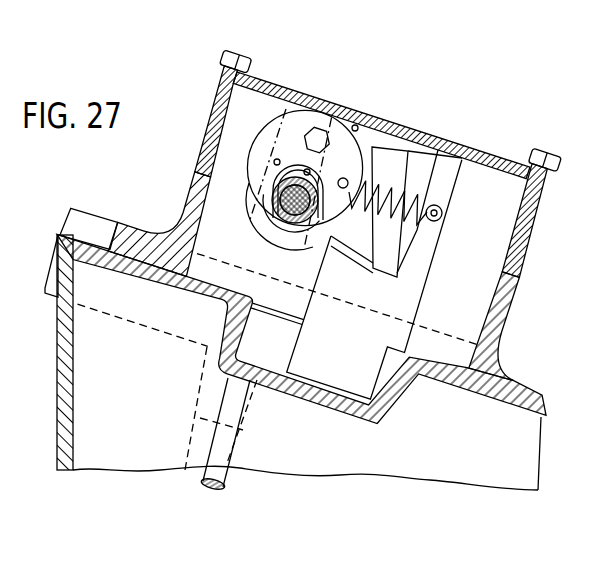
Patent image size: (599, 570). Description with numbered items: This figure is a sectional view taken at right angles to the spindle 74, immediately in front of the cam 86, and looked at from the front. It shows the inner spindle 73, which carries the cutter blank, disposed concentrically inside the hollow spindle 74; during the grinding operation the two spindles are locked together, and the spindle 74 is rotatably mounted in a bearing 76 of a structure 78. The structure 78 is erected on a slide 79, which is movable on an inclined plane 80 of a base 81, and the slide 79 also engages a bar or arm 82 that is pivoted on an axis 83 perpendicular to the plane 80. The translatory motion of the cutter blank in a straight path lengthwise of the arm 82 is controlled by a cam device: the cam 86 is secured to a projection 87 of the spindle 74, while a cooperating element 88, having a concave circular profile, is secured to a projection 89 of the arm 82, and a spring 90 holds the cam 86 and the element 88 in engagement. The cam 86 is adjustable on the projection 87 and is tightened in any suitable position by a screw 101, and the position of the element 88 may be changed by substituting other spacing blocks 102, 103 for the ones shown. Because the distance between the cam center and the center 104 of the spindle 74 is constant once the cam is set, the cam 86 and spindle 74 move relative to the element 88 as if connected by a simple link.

The spindle 73 is at (279, 210).
The spindle 74 is at (277, 186).
The bearing 76 is at (272, 236).
The structure 78 is at (508, 303).
The slide 79 is at (508, 346).
The inclined plane 80 is at (110, 242).
The base 81 is at (58, 337).
The bar or arm 82 is at (80, 224).
The axis 83 is at (206, 478).
The cam 86 is at (275, 131).
The projection 87 is at (300, 107).
The element 88 is at (387, 150).
The projection 89 is at (357, 348).
The spring 90 is at (442, 206).
The screw 101 is at (318, 128).
The spacing block 102 is at (422, 165).
The spacing block 103 is at (336, 250).
The center of spindle 104 is at (272, 185).